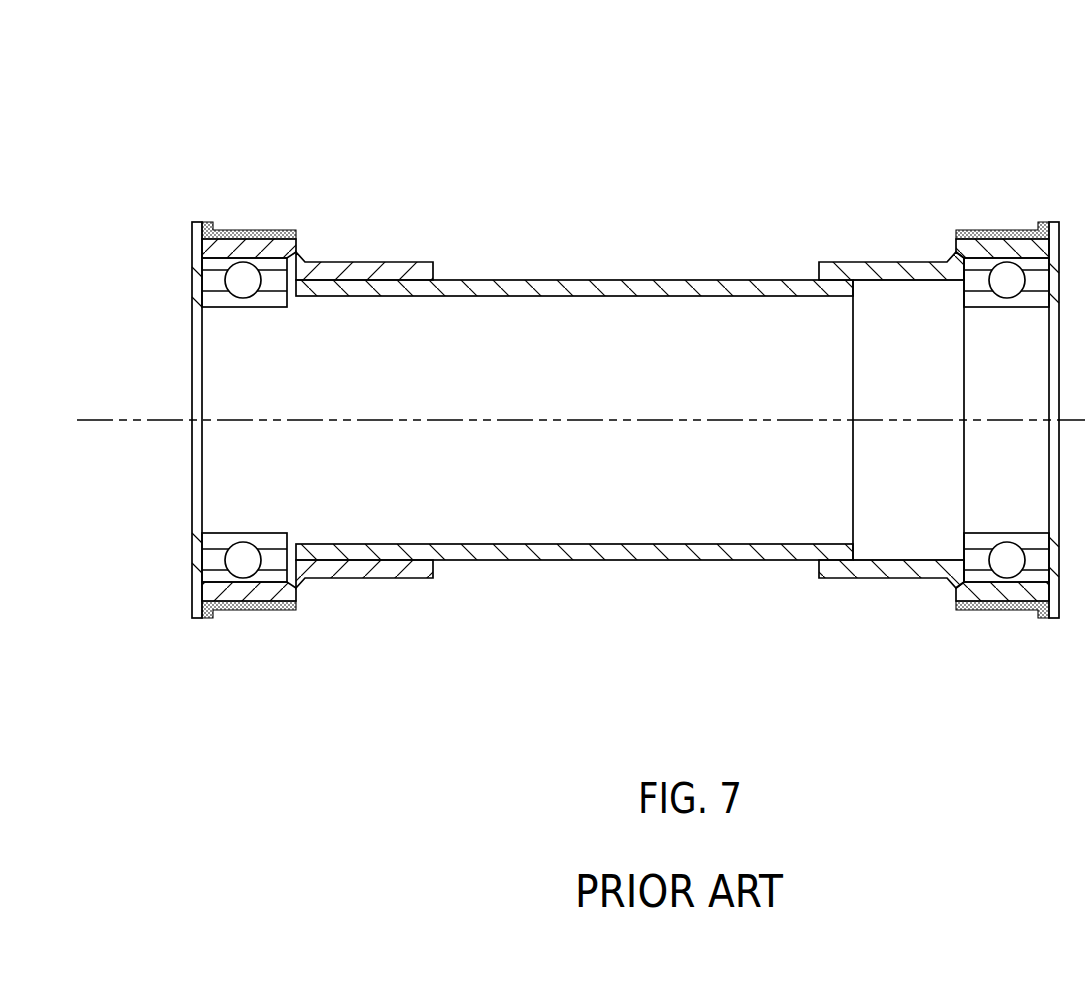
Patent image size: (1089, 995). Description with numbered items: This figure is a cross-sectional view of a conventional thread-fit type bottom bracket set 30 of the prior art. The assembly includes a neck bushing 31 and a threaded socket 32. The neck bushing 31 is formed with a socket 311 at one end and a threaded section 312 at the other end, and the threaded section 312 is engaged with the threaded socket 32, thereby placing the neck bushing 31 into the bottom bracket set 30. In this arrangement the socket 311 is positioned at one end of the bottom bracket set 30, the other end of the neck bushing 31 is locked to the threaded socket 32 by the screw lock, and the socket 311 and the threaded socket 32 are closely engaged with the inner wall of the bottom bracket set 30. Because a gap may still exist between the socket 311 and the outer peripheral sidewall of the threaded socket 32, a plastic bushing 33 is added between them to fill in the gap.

The bottom bracket set 30 is at (610, 200).
The neck bushing 31 is at (703, 288).
The socket 311 is at (895, 275).
The threaded section 312 is at (353, 280).
The threaded socket 32 is at (277, 230).
The bushing 33 is at (225, 230).